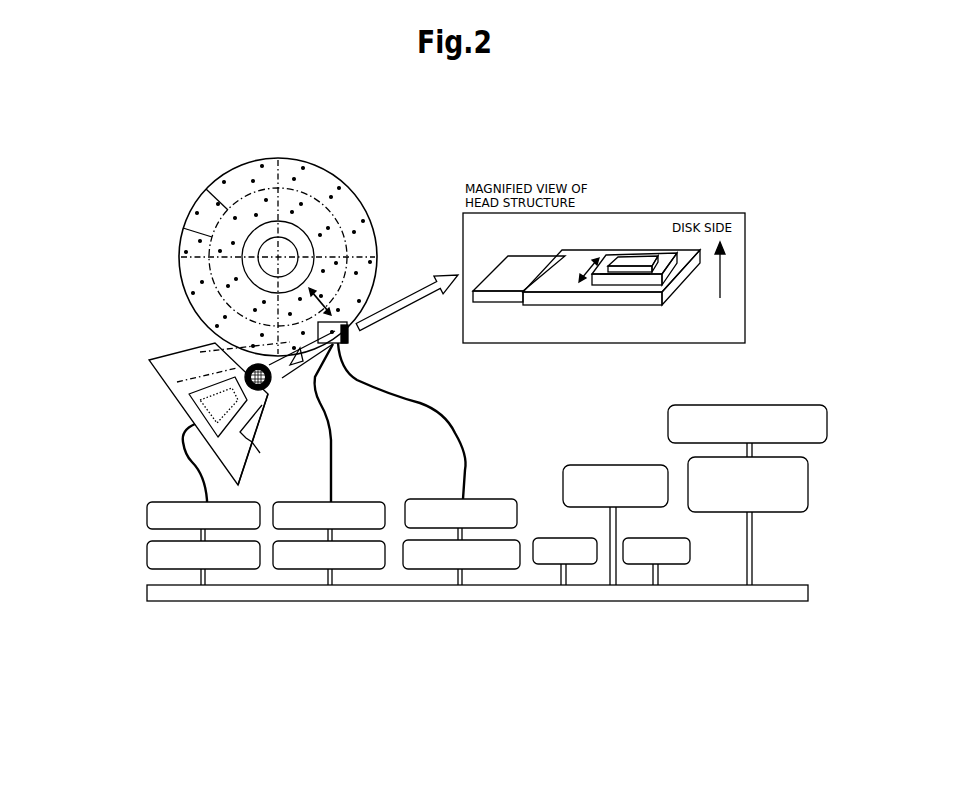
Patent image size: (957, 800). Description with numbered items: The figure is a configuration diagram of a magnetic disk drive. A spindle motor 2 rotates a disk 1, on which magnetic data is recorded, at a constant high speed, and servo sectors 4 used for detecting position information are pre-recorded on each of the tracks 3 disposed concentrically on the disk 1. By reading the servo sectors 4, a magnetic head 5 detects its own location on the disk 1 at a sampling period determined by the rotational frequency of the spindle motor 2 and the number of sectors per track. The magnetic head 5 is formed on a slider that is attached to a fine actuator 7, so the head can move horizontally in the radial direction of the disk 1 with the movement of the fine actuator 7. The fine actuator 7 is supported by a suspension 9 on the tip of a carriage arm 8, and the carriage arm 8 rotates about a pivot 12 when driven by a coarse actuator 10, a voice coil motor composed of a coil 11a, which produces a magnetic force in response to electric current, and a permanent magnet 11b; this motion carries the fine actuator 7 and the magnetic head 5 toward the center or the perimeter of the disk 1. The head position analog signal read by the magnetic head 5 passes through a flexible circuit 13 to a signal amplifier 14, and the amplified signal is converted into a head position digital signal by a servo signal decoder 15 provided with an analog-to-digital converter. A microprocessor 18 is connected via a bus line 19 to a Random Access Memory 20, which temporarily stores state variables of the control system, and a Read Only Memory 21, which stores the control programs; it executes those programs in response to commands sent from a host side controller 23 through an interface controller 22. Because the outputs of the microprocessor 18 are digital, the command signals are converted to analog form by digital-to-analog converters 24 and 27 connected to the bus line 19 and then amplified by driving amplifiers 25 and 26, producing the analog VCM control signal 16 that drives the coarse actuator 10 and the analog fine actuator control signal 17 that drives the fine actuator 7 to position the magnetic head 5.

The disk 1 is at (278, 240).
The spindle motor 2 is at (247, 218).
The tracks 3 is at (250, 254).
The servo sectors 4 is at (185, 237).
The magnetic head 5 is at (644, 295).
The fine actuator 7 is at (622, 306).
The carriage arm 8 is at (495, 270).
The suspension 9 is at (586, 236).
The coarse actuator 10 is at (266, 439).
The coil 11a is at (177, 407).
The permanent magnet 11b is at (202, 400).
The pivot 12 is at (290, 387).
The flexible circuit 13 is at (419, 421).
The signal amplifier 14 is at (462, 496).
The servo signal decoder 15 is at (482, 515).
The analog VCM control signal 16 is at (163, 463).
The analog fine actuator control signal 17 is at (342, 423).
The microprocessor 18 is at (615, 503).
The bus line 19 is at (477, 618).
The Random Access Memory 20 is at (573, 594).
The Read Only Memory 21 is at (666, 594).
The interface controller 22 is at (751, 521).
The host side controller 23 is at (747, 417).
The digital-to-analog converter 24 is at (183, 563).
The driving amplifier 25 is at (183, 521).
The driving amplifier 26 is at (331, 497).
The digital-to-analog converter 27 is at (351, 515).